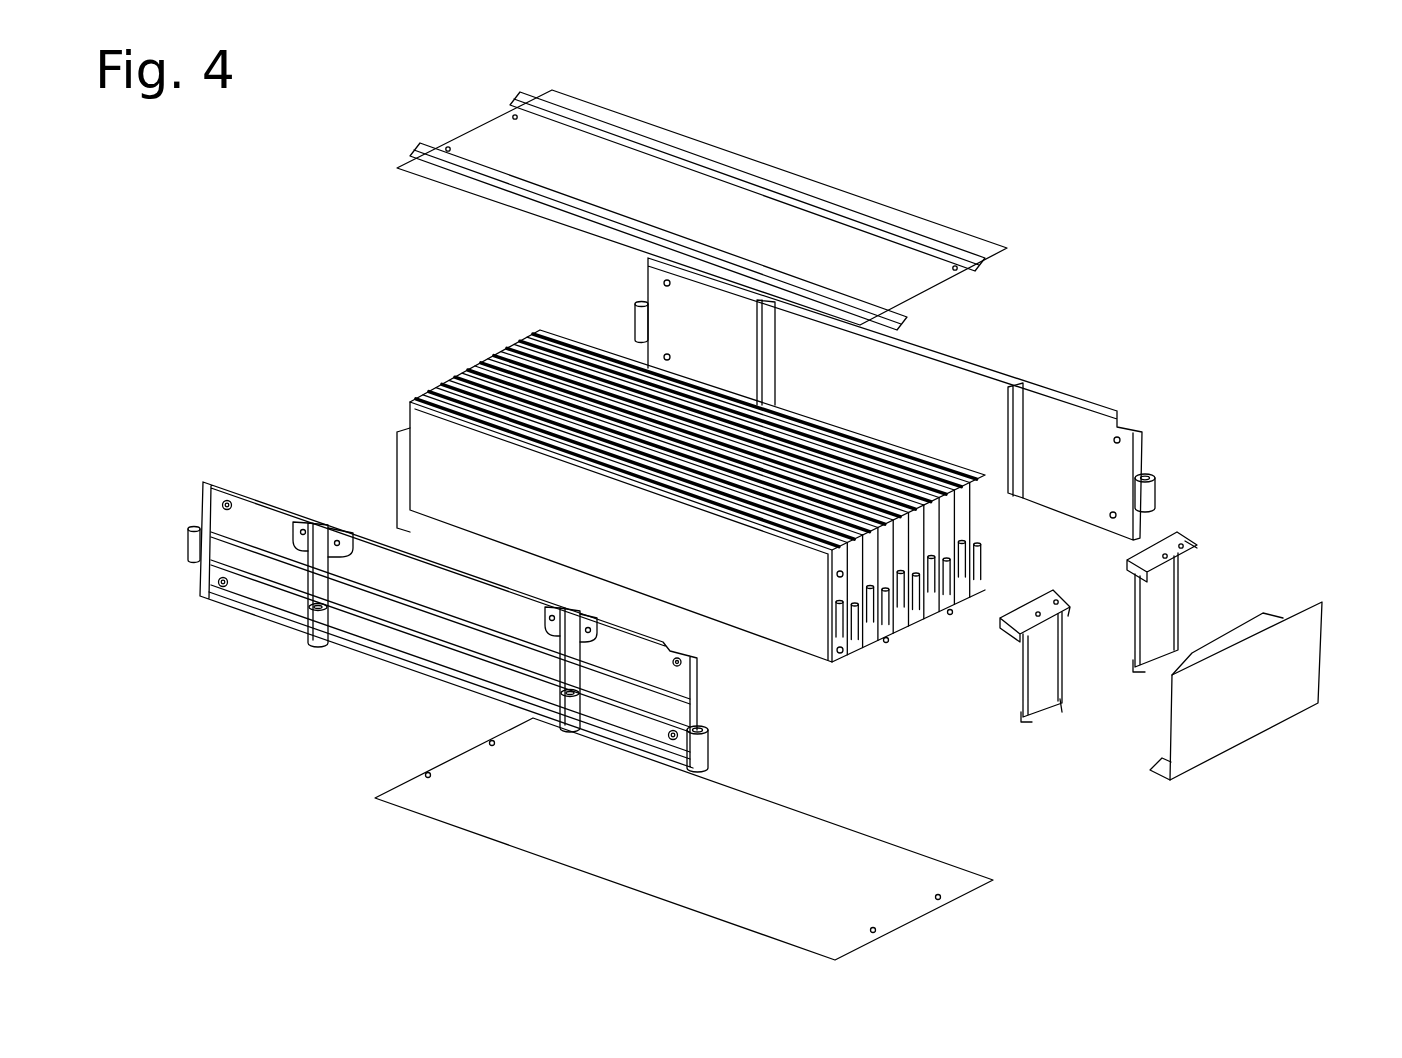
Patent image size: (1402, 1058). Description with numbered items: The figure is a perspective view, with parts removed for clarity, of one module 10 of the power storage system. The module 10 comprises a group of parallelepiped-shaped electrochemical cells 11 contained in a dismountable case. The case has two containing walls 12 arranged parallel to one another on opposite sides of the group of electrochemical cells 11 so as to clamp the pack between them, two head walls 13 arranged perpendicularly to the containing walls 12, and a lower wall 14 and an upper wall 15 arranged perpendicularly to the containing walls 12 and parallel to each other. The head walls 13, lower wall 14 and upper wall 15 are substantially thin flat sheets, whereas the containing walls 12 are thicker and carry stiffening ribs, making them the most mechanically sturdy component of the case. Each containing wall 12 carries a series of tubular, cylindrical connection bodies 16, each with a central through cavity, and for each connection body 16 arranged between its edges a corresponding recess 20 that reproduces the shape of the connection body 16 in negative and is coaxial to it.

The module 10 is at (1246, 875).
The electrochemical cells 11 is at (445, 485).
The containing walls 12 is at (366, 600).
The head walls 13 is at (1248, 690).
The lower wall 14 is at (610, 832).
The upper wall 15 is at (736, 209).
The connection bodies 16 is at (192, 543).
The recess 20 is at (312, 568).